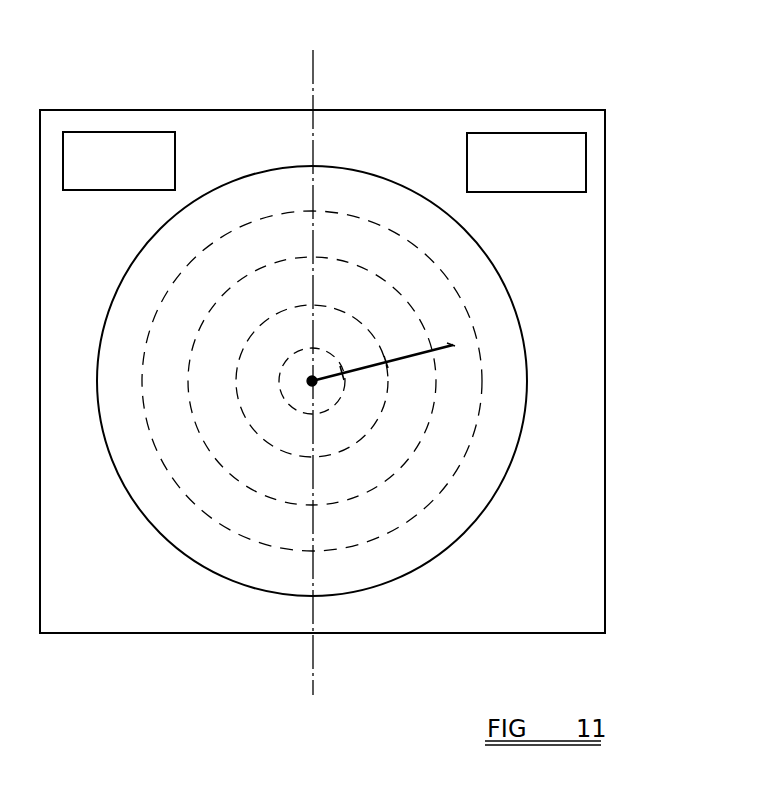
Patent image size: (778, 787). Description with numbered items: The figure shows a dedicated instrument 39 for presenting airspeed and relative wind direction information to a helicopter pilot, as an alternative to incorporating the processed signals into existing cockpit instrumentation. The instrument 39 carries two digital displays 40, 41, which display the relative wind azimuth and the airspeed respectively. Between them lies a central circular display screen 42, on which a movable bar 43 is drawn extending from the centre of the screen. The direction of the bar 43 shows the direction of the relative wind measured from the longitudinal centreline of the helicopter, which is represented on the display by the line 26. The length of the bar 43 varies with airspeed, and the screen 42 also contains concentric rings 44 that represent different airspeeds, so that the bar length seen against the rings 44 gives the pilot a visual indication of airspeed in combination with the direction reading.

The longitudinal centreline of the helicopter 26 is at (313, 90).
The instrument 39 is at (605, 275).
The digital display 40 is at (125, 132).
The digital display 41 is at (522, 133).
The central circular display screen 42 is at (200, 551).
The movable bar 43 is at (448, 350).
The concentric rings 44 is at (427, 437).